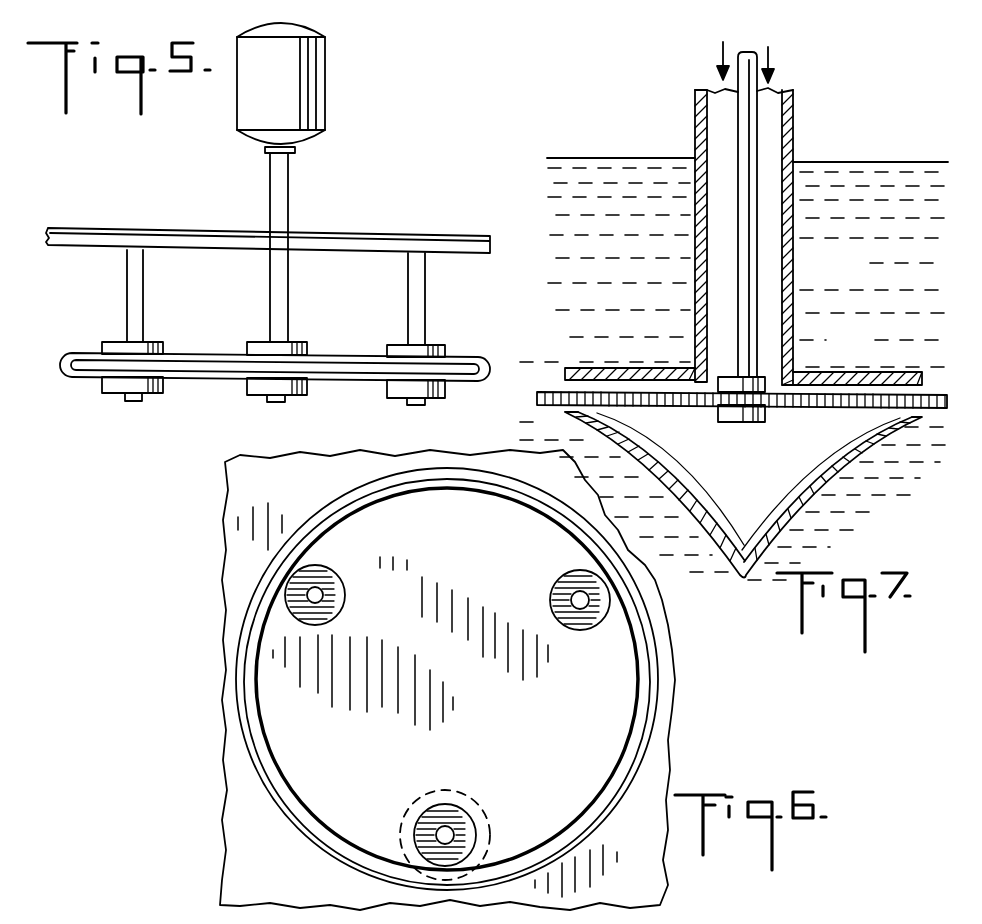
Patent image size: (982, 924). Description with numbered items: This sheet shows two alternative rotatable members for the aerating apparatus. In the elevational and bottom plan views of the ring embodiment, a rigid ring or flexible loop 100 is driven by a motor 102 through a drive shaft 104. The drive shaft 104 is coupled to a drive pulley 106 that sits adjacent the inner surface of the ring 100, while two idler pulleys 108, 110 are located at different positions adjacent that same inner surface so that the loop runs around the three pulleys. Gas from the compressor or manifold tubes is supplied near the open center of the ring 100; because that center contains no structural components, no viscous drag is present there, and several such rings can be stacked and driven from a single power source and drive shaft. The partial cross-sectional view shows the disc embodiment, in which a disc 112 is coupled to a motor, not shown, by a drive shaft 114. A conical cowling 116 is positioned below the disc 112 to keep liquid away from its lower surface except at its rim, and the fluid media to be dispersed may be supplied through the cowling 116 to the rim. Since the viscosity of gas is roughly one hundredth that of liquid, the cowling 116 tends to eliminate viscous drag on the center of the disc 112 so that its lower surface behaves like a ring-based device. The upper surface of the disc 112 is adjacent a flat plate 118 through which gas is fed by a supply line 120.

In FIG. 5, the rigid ring or flexible loop 100 is at (348, 365).
In FIG. 6, the rigid ring or flexible loop 100 is at (325, 513).
In FIG. 5, the motor 102 is at (310, 87).
In FIG. 6, the motor 102 is at (413, 810).
In FIG. 5, the drive shaft 104 is at (280, 287).
In FIG. 6, the drive shaft 104 is at (396, 826).
In FIG. 5, the drive pulley 106 is at (253, 343).
In FIG. 6, the drive pulley 106 is at (462, 817).
In FIG. 5, the idler pulley 108 is at (110, 393).
In FIG. 6, the idler pulley 108 is at (345, 593).
In FIG. 5, the idler pulley 110 is at (438, 347).
In FIG. 6, the idler pulley 110 is at (557, 587).
In FIG. 7, the disc 112 is at (547, 388).
In FIG. 7, the drive shaft 114 is at (747, 123).
In FIG. 7, the conical cowling 116 is at (803, 490).
In FIG. 7, the flat plate 118 is at (845, 370).
In FIG. 7, the supply line 120 is at (795, 275).